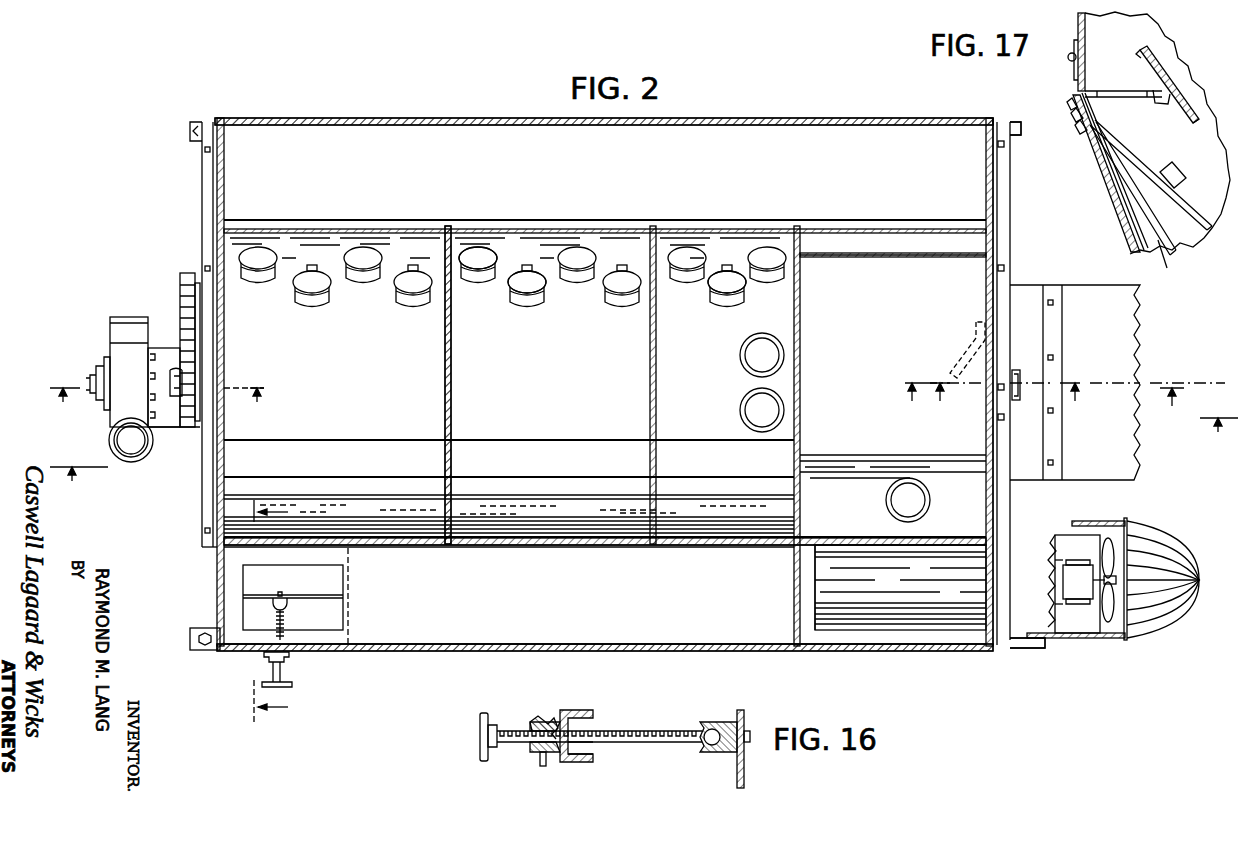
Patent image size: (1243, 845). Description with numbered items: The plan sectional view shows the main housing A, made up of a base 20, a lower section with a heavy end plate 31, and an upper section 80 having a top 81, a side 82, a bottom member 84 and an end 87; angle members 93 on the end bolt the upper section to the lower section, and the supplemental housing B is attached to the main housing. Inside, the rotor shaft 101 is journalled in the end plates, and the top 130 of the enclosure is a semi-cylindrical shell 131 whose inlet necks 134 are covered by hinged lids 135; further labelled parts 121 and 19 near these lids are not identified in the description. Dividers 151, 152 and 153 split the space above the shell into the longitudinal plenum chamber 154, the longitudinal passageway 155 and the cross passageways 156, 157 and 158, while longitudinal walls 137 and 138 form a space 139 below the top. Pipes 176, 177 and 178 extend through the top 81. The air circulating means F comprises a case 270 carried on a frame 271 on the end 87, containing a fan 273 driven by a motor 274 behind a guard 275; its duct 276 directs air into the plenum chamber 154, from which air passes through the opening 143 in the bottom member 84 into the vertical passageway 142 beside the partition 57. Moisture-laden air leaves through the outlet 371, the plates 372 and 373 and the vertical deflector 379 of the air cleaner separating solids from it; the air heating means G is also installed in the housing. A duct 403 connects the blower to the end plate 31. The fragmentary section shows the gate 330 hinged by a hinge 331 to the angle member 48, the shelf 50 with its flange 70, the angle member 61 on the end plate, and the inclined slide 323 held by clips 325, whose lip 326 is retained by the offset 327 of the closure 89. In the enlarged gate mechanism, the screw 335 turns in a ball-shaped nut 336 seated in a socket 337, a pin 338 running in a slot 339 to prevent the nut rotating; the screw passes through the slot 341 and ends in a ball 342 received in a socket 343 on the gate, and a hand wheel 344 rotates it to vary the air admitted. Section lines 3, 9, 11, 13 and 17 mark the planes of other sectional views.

In FIG. 2, the upper section 80 is at (213, 510).
In FIG. 2, the angle members 93 is at (1000, 218).
In FIG. 2, the end wall 87 is at (992, 192).
In FIG. 2, the base 20 is at (1021, 130).
In FIG. 17, the base 20 is at (1106, 132).
In FIG. 2, the longitudinal passageway 155 is at (570, 165).
In FIG. 2, the top 81 is at (818, 126).
In FIG. 2, the tray 121 is at (412, 240).
In FIG. 2, the divider 151 is at (452, 412).
In FIG. 2, the divider 152 is at (652, 402).
In FIG. 2, the divider 153 is at (800, 440).
In FIG. 2, the top of enclosure 130 is at (418, 340).
In FIG. 2, the lids 135 is at (478, 268).
In FIG. 2, the necks 134 is at (527, 272).
In FIG. 2, the semi-cylindrical shell 131 is at (590, 362).
In FIG. 2, the container 19 is at (727, 300).
In FIG. 2, the pipe 176 is at (742, 368).
In FIG. 2, the pipe 177 is at (755, 420).
In FIG. 2, the pipe 178 is at (887, 502).
In FIG. 2, the longitudinal wall 137 is at (868, 262).
In FIG. 2, the space 139 is at (978, 298).
In FIG. 2, the plate 372 is at (910, 376).
In FIG. 2, the vertical deflector 379 is at (965, 355).
In FIG. 2, the end plate 31 is at (228, 470).
In FIG. 17, the end plate 31 is at (1158, 47).
In FIG. 2, the cross passageway 156 is at (398, 476).
In FIG. 2, the cross passageway 157 is at (572, 483).
In FIG. 2, the opening 143 is at (320, 575).
In FIG. 2, the cross passageway 158 is at (762, 507).
In FIG. 2, the section line 17 is at (260, 611).
In FIG. 2, the bottom member 84 is at (680, 598).
In FIG. 2, the side 82 is at (420, 654).
In FIG. 2, the plenum chamber 154 is at (742, 632).
In FIG. 2, the vertical passageway 142 is at (315, 636).
In FIG. 2, the partition 57 is at (352, 593).
In FIG. 2, the gate 330 is at (338, 598).
In FIG. 17, the gate 330 is at (1088, 44).
In FIG. 2, the screw 335 is at (275, 617).
In FIG. 16, the screw 335 is at (632, 732).
In FIG. 2, the hand wheel 344 is at (293, 688).
In FIG. 16, the hand wheel 344 is at (482, 715).
In FIG. 2, the main housing A is at (215, 577).
In FIG. 2, the longitudinal wall 138 is at (920, 547).
In FIG. 2, the duct 276 is at (845, 600).
In FIG. 2, the plate 373 is at (122, 352).
In FIG. 2, the shaft 101 is at (178, 372).
In FIG. 2, the duct 403 is at (166, 418).
In FIG. 2, the section line 9 is at (157, 407).
In FIG. 2, the section line 3 is at (644, 464).
In FIG. 2, the section line 13 is at (994, 405).
In FIG. 2, the section line 11 is at (1075, 407).
In FIG. 2, the air outlet opening 371 is at (1010, 360).
In FIG. 2, the supplemental housing B is at (1130, 460).
In FIG. 2, the case 270 is at (1098, 514).
In FIG. 2, the motor 274 is at (1082, 600).
In FIG. 2, the fan 273 is at (1112, 552).
In FIG. 2, the guard 275 is at (1195, 566).
In FIG. 2, the frame 271 is at (1030, 650).
In FIG. 2, the air heating means G is at (1042, 625).
In FIG. 2, the air circulating means F is at (1110, 625).
In FIG. 17, the closure 89 is at (1122, 210).
In FIG. 17, the angle member 48 is at (1087, 89).
In FIG. 17, the hinge 331 is at (1074, 68).
In FIG. 17, the offset 327 is at (1071, 101).
In FIG. 17, the lip 326 is at (1088, 110).
In FIG. 17, the flange 70 is at (1168, 68).
In FIG. 17, the shelf 50 is at (1165, 98).
In FIG. 17, the slide 323 is at (1205, 225).
In FIG. 17, the clips 325 is at (1197, 160).
In FIG. 17, the angle member 61 is at (1169, 266).
In FIG. 16, the socket 337 is at (541, 718).
In FIG. 16, the slot 339 is at (537, 755).
In FIG. 16, the pin 338 is at (543, 768).
In FIG. 16, the nut 336 is at (550, 722).
In FIG. 16, the slot 341 is at (565, 748).
In FIG. 16, the socket 343 is at (716, 722).
In FIG. 16, the ball 342 is at (735, 754).